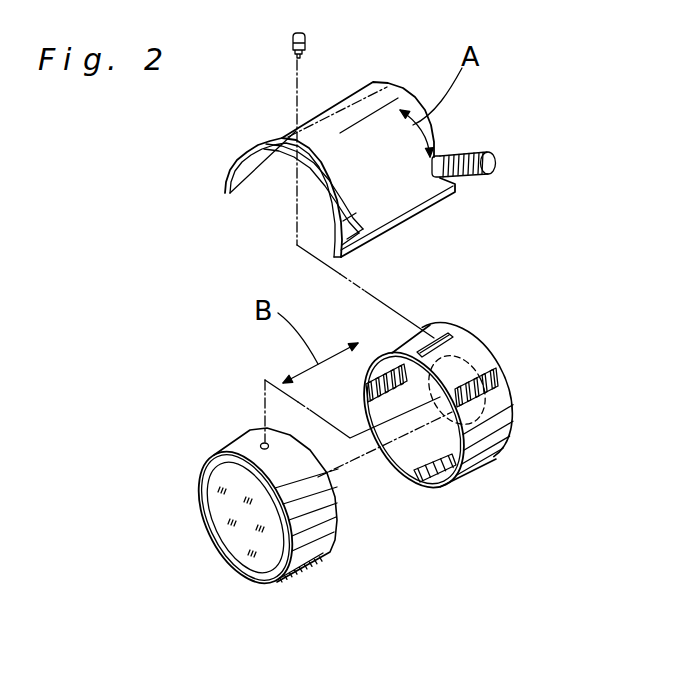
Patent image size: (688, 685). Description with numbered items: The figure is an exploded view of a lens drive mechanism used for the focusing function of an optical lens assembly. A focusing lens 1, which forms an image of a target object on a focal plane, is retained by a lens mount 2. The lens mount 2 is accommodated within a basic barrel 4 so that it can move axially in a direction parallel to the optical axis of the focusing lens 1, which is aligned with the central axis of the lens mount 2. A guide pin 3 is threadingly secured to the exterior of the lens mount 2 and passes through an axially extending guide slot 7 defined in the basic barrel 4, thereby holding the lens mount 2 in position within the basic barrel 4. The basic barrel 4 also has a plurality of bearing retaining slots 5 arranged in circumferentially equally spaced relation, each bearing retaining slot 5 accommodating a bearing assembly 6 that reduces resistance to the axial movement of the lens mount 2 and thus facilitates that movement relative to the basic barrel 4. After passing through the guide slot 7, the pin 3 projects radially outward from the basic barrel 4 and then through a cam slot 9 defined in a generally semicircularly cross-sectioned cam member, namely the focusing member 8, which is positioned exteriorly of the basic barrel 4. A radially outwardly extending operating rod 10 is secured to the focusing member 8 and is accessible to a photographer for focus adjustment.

The focusing lens 1 is at (232, 543).
The lens mount 2 is at (322, 547).
The guide pin 3 is at (303, 45).
The basic barrel 4 is at (398, 476).
The bearing retaining slot 5 is at (390, 398).
The bearing assembly 6 is at (365, 393).
The guide slot 7 is at (450, 333).
The focusing member 8 is at (415, 212).
The cam slot 9 is at (340, 190).
The operating rod 10 is at (478, 153).